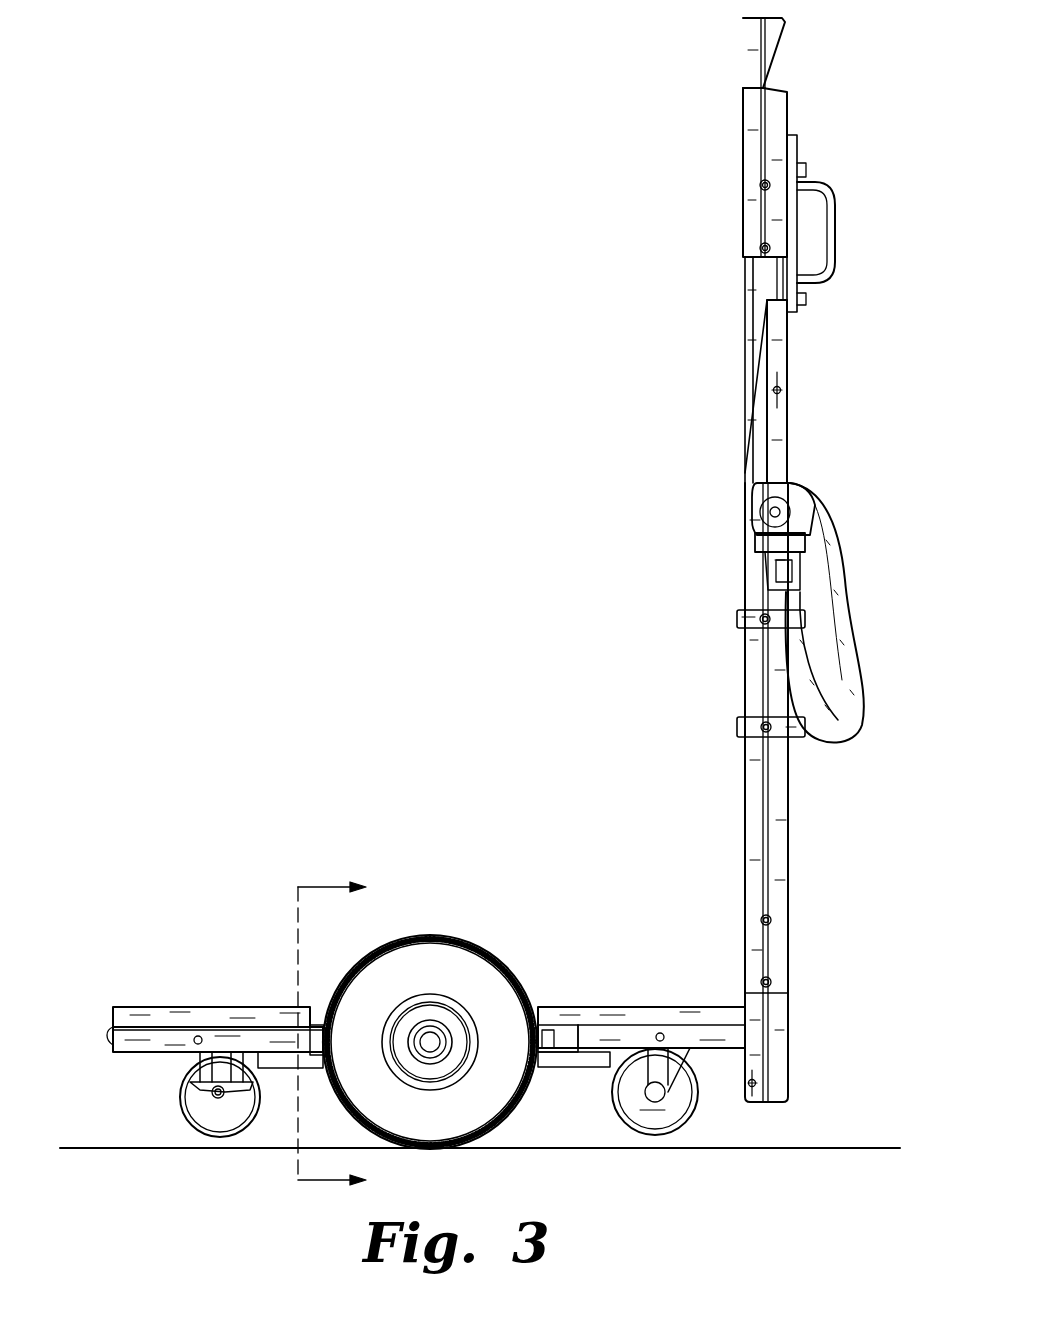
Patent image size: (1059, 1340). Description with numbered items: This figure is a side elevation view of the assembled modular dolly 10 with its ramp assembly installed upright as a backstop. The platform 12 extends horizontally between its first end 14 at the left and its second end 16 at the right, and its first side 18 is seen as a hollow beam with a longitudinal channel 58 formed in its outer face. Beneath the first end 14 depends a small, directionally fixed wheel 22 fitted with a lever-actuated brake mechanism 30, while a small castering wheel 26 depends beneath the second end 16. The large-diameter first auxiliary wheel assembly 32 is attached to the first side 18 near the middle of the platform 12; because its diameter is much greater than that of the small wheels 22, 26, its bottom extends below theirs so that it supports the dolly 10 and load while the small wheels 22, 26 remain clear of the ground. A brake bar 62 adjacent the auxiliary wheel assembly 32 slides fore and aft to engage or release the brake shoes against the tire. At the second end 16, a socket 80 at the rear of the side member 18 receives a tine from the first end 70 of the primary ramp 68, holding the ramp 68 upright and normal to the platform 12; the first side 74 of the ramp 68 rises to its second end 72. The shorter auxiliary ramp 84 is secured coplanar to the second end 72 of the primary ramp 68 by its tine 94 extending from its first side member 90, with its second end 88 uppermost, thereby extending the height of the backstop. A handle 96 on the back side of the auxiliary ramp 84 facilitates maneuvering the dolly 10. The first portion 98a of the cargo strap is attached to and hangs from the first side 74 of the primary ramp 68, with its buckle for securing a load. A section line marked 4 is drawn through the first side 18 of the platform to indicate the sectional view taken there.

The modular dolly 10 is at (238, 466).
The platform 12 is at (568, 990).
The first end 14 is at (108, 1022).
The second end 16 is at (718, 1005).
The first side 18 is at (196, 1012).
The first end wheel 22 is at (172, 1110).
The second end wheel 26 is at (698, 1108).
The brake mechanism 30 is at (178, 1082).
The first auxiliary wheel assembly 32 is at (442, 930).
The longitudinal channel 58 is at (242, 1020).
The brake bar 62 is at (568, 1058).
The primary ramp 68 is at (716, 785).
The first end 70 is at (790, 992).
The second end 72 is at (788, 306).
The first side 74 is at (780, 797).
The socket 80 is at (790, 1048).
The auxiliary ramp 84 is at (716, 181).
The second end 88 is at (742, 20).
The first side member 90 is at (757, 70).
The tine 94 is at (744, 300).
The handle 96 is at (835, 225).
The first portion of cargo strap 98a is at (840, 590).
The section line 4- 4 is at (345, 1037).